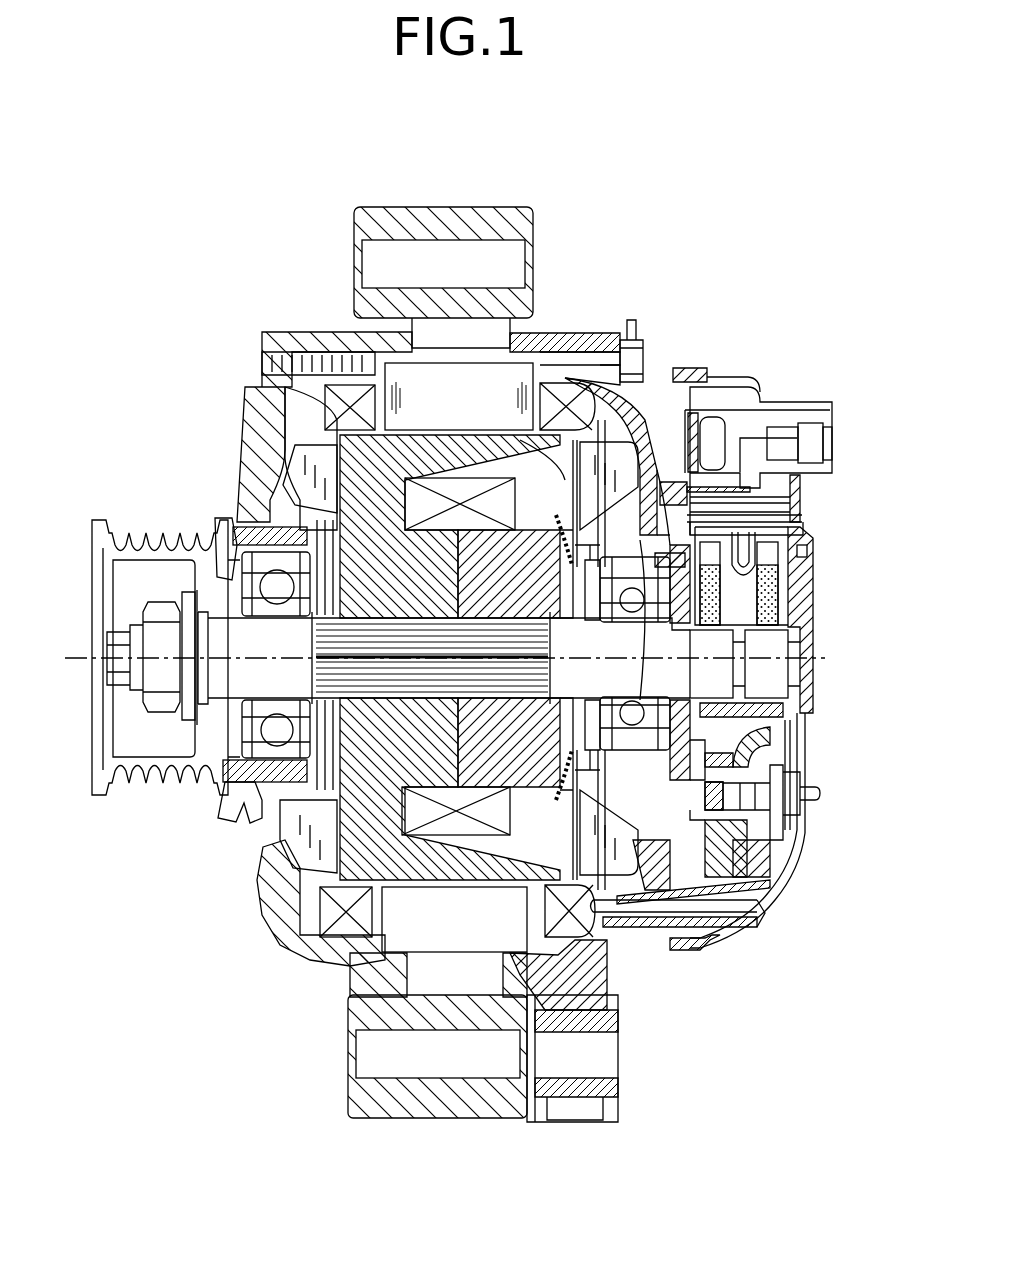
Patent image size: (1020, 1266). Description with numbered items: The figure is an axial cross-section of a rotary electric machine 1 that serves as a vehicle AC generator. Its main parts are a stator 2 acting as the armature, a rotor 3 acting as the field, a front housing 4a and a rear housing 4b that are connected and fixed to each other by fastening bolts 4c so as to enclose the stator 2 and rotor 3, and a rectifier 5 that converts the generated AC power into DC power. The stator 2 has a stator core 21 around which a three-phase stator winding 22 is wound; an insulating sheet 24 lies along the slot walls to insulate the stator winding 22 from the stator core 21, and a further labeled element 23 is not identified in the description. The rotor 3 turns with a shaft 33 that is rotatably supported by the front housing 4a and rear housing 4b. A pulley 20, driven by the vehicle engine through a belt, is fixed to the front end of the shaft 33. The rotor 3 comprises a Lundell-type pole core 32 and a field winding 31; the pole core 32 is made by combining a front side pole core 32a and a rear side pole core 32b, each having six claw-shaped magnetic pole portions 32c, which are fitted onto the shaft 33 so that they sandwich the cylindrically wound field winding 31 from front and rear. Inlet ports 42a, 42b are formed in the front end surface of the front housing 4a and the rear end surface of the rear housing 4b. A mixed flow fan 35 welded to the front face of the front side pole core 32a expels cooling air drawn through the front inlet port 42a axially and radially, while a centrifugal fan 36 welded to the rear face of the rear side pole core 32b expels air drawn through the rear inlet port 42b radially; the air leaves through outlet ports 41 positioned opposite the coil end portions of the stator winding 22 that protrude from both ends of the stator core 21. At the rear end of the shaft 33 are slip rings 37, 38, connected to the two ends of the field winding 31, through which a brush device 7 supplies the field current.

The rotary electric machine 1 is at (581, 195).
The stator 2 is at (455, 347).
The stator core 21 is at (342, 400).
The stator winding 22 is at (284, 342).
The stator coil end 23 is at (563, 378).
The insulating sheet 24 is at (538, 383).
The rotor 3 is at (560, 860).
The field winding 31 is at (447, 823).
The Lundell-type pole core 32 is at (447, 888).
The front side pole core 32a is at (363, 860).
The rear side pole core 32b is at (600, 860).
The claw-shaped magnetic pole portion 32c is at (580, 1037).
The shaft 33 is at (227, 633).
The mixed flow fan 35 is at (297, 860).
The centrifugal fan 36 is at (707, 950).
The slip ring 37 is at (720, 645).
The slip ring 38 is at (765, 677).
The front housing 4a is at (292, 336).
The rear housing 4b is at (600, 337).
The fastening bolt 4c is at (637, 343).
The outlet port 41 is at (297, 953).
The inlet port 42a is at (257, 828).
The inlet port 42b is at (660, 530).
The rectifier 5 is at (793, 855).
The brush device 7 is at (775, 598).
The pulley 20 is at (140, 535).